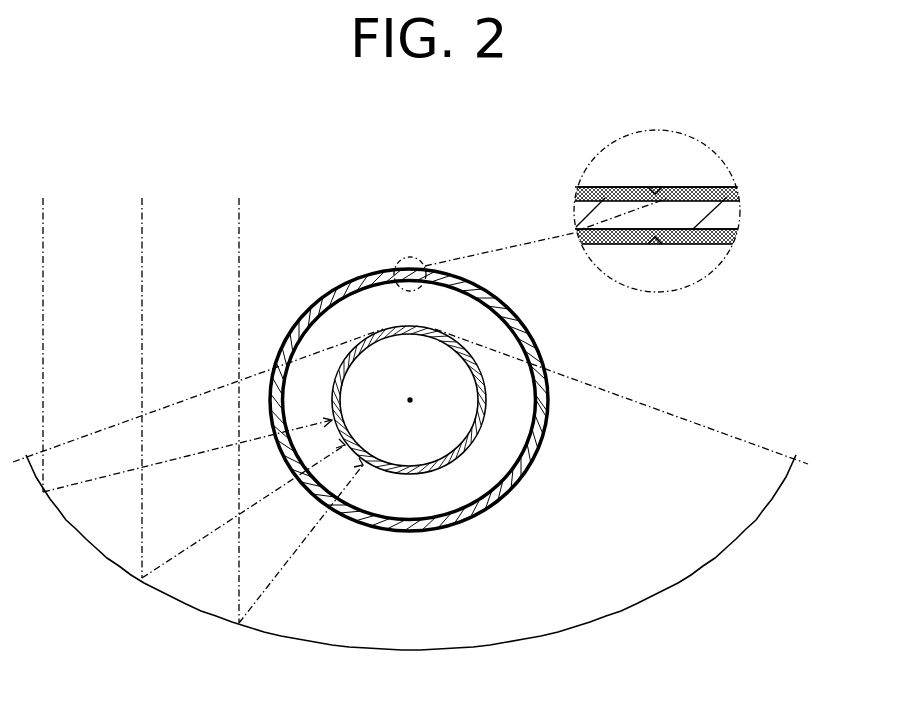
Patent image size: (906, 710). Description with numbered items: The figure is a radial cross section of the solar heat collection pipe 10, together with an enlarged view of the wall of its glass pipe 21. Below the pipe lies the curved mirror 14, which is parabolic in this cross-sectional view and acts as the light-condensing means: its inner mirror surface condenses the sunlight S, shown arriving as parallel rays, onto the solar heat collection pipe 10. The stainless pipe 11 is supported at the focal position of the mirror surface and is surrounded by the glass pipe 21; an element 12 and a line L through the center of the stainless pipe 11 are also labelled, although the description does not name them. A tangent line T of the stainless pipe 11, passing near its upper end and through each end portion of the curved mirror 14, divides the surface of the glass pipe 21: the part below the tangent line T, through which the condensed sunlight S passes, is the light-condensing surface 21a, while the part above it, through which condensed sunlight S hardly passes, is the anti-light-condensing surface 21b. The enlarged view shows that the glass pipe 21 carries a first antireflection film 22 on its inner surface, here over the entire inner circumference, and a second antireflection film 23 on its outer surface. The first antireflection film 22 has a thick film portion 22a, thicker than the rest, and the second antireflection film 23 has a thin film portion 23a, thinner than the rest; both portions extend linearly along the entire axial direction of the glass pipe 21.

The solar heat collection pipe 10 is at (433, 183).
The stainless pipe 11 is at (486, 404).
The inner space 12 is at (489, 495).
The curved mirror 14 is at (588, 629).
The glass pipe 21 is at (513, 307).
The light-condensing surface 21a is at (541, 437).
The anti-light-condensing surface 21b is at (487, 282).
The first antireflection film 22 is at (514, 476).
The thick film portion 22a is at (656, 246).
The second antireflection film 23 is at (549, 418).
The thin film portion 23a is at (655, 187).
The sunlight S is at (292, 232).
The tangent line T is at (329, 349).
The central axis L is at (410, 405).